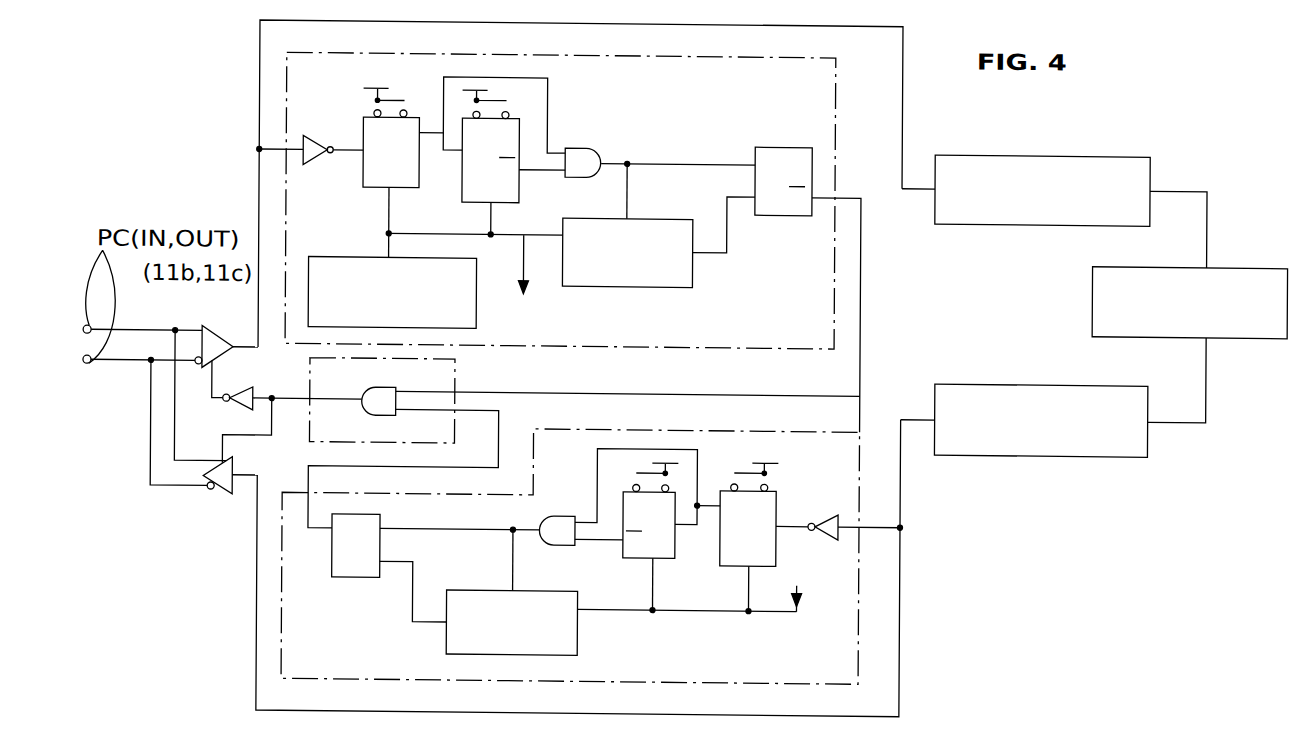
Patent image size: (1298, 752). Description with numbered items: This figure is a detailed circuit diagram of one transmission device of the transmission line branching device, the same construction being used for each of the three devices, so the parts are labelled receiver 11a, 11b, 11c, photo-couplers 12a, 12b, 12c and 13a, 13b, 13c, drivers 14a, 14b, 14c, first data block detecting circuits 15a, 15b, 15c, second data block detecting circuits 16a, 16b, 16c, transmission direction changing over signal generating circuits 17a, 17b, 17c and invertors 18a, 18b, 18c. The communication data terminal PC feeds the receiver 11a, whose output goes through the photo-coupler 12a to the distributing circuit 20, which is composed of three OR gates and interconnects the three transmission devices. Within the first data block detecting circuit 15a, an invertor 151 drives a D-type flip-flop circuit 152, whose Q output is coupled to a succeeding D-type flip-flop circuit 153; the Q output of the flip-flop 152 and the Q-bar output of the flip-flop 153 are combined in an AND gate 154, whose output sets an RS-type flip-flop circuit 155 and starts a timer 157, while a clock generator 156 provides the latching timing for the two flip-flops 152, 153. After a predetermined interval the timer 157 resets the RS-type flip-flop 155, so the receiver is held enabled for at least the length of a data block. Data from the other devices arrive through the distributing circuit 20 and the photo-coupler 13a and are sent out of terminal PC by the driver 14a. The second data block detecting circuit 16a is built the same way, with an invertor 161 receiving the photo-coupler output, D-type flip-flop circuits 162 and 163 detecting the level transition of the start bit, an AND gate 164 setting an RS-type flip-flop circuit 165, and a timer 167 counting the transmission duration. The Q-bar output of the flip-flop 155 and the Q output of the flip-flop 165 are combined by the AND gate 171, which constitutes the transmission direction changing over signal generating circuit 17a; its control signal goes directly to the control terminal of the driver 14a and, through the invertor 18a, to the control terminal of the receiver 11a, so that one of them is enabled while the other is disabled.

The receiver 11a is at (226, 330).
The receiver 11b is at (226, 330).
The receiver 11c is at (221, 327).
The photo-coupler 12a is at (1043, 176).
The photo-coupler 12b is at (1043, 176).
The photo-coupler 12c is at (937, 148).
The photo-coupler 13a is at (1041, 404).
The photo-coupler 13b is at (1041, 404).
The photo-coupler 13c is at (938, 377).
The driver 14a is at (196, 513).
The driver 14b is at (196, 513).
The driver 14c is at (218, 494).
The first data block detecting circuit 15a is at (577, 236).
The first data block detecting circuit 15b is at (577, 236).
The first data block detecting circuit 15c is at (836, 54).
The second data block detecting circuit 16a is at (601, 504).
The second data block detecting circuit 16b is at (601, 504).
The second data block detecting circuit 16c is at (861, 424).
The transmission direction changing over signal generating circuit 17a is at (565, 443).
The transmission direction changing over signal generating circuit 17b is at (565, 443).
The transmission direction changing over signal generating circuit 17c is at (457, 358).
The invertor 18a is at (235, 407).
The invertor 18b is at (235, 407).
The invertor 18c is at (232, 414).
The distributing circuit 20 is at (1271, 258).
The invertor 151 is at (310, 135).
The D-type flip-flop circuit 152 is at (363, 116).
The D-type flip-flop circuit 153 is at (515, 116).
The AND gate 154 is at (580, 145).
The RS-type flip-flop circuit 155 is at (765, 142).
The clock generator 156 is at (313, 256).
The timer 157 is at (566, 215).
The invertor 161 is at (840, 509).
The D-type flip-flop circuit 162 is at (780, 490).
The D-type flip-flop circuit 163 is at (624, 487).
The AND gate 164 is at (553, 513).
The RS-type flip-flop circuit 165 is at (385, 513).
The timer 167 is at (450, 588).
The AND gate 171 is at (364, 390).